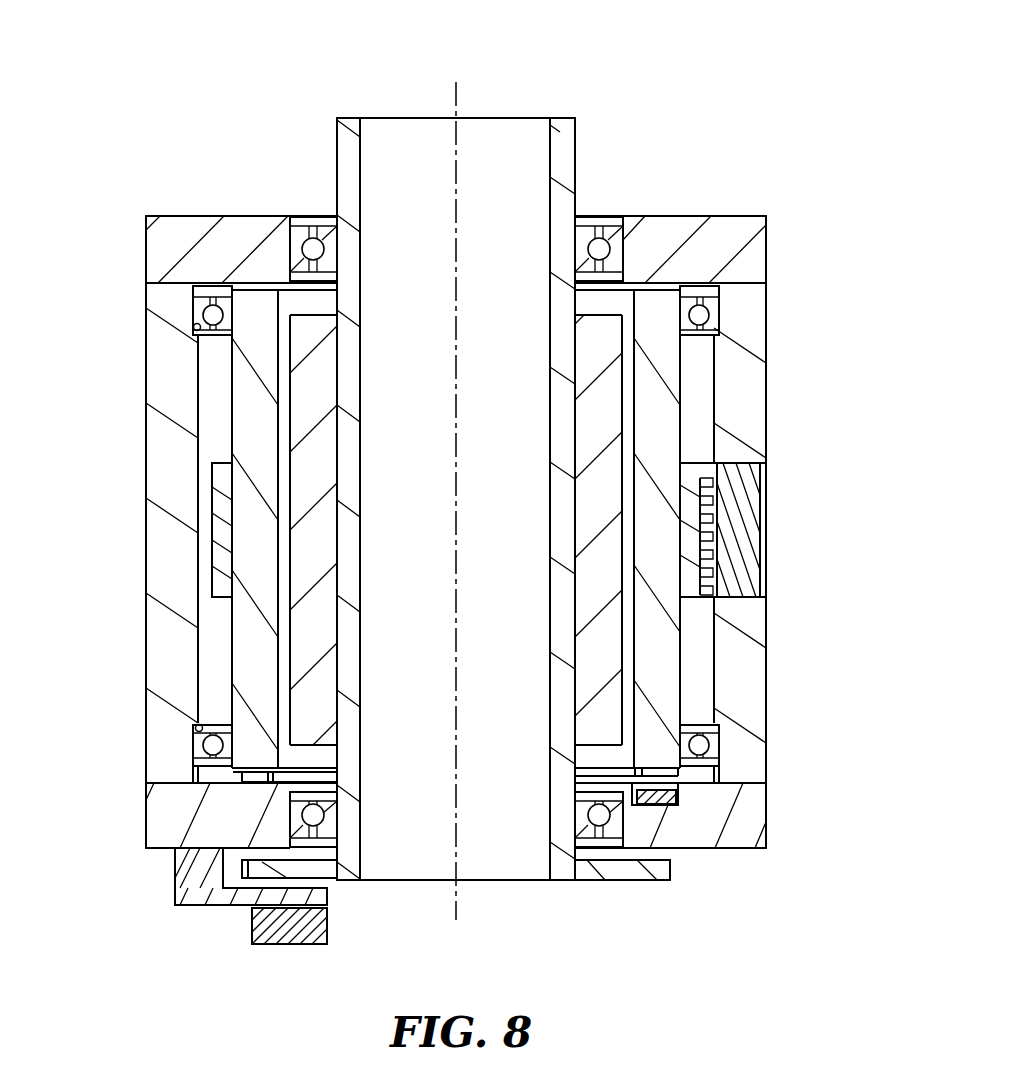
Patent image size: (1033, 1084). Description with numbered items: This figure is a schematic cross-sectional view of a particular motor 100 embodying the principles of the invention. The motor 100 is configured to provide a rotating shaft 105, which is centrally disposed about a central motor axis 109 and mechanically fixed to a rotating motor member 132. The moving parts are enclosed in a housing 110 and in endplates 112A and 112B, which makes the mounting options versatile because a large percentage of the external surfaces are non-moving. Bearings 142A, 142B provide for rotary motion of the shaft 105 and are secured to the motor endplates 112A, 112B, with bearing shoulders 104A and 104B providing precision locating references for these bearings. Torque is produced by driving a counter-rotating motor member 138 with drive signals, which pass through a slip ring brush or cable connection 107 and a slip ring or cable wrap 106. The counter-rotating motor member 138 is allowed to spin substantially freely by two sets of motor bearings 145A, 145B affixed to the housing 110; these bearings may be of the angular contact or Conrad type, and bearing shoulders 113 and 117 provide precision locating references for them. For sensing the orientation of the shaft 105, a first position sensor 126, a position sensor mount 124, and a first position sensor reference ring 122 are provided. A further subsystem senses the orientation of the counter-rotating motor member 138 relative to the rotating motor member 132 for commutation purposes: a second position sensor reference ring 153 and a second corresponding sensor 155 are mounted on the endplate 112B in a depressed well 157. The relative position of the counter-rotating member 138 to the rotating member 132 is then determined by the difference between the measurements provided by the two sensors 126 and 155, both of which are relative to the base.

The motor 100 is at (720, 96).
The rotating shaft 105 is at (572, 128).
The central motor axis 109 is at (458, 100).
The bearing shoulder 104A is at (296, 283).
The bearing shoulder 104B is at (291, 793).
The bearing 142A is at (608, 214).
The bearing 142B is at (613, 850).
The endplate 112A is at (726, 243).
The endplate 112B is at (167, 820).
The housing 110 is at (165, 369).
The motor bearing 145A is at (207, 284).
The motor bearing 145B is at (200, 772).
The bearing shoulder 113 is at (198, 325).
The bearing shoulder 117 is at (202, 727).
The counter-rotating motor member 138 is at (255, 452).
The rotating motor member 132 is at (310, 560).
The slip ring or cable wrap 106 is at (687, 588).
The slip ring brush or cable connection 107 is at (747, 512).
The second position sensor reference ring 153 is at (678, 770).
The depressed well 157 is at (675, 784).
The second sensor 155 is at (650, 800).
The position sensor mount 124 is at (187, 878).
The first position sensor 126 is at (268, 922).
The first position sensor reference ring 122 is at (600, 867).